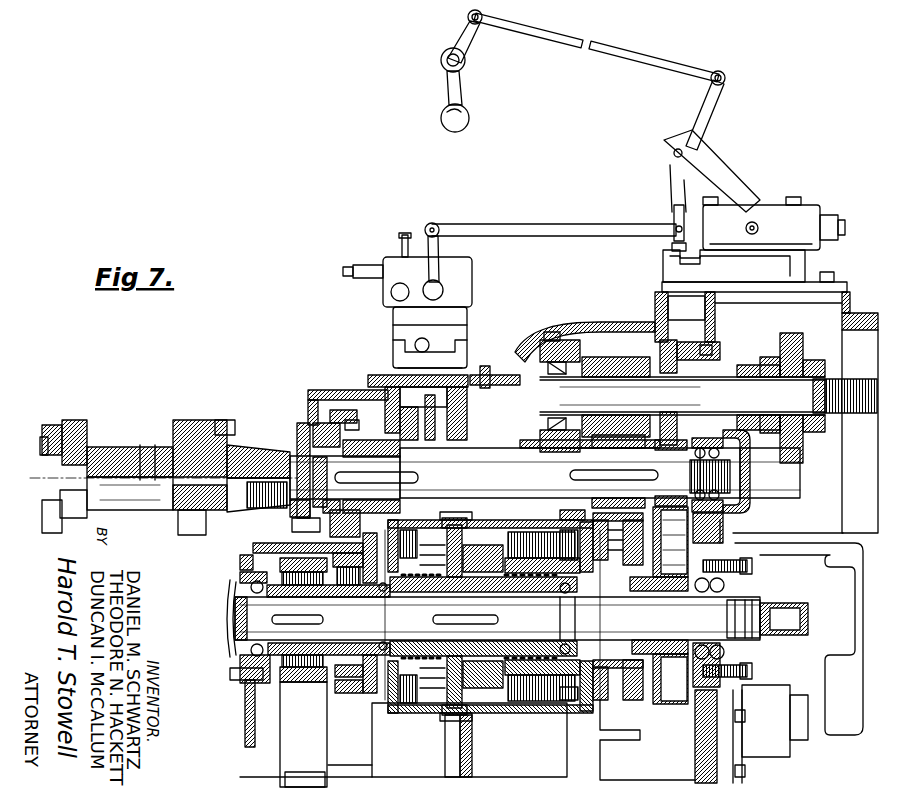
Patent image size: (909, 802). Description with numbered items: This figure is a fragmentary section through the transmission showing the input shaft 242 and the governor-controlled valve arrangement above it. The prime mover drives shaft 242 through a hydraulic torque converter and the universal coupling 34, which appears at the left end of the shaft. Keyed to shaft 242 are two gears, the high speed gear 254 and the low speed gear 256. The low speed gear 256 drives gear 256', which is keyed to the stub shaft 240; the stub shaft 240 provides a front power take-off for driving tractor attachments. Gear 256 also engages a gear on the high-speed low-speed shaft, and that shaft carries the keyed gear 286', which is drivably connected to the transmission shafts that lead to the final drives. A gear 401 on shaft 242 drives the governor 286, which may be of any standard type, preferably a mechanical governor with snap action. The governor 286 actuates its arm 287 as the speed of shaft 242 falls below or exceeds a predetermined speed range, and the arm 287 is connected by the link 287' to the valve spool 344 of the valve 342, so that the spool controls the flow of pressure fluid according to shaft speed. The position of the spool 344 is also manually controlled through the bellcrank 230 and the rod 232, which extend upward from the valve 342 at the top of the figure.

The universal coupling 34 is at (139, 424).
The bellcrank 230 is at (715, 118).
The rod 232 is at (688, 66).
The stub shaft 240 is at (598, 380).
The shaft 242 is at (500, 458).
The high speed gear 254 is at (325, 395).
The low speed gear 256 is at (650, 471).
The gear 256' is at (630, 360).
The governor 286 is at (386, 300).
The gear 286' is at (270, 645).
The arm 287 is at (421, 229).
The link 287' is at (550, 206).
The valve 342 is at (818, 212).
The valve spool 344 is at (680, 212).
The gear 401 is at (372, 412).